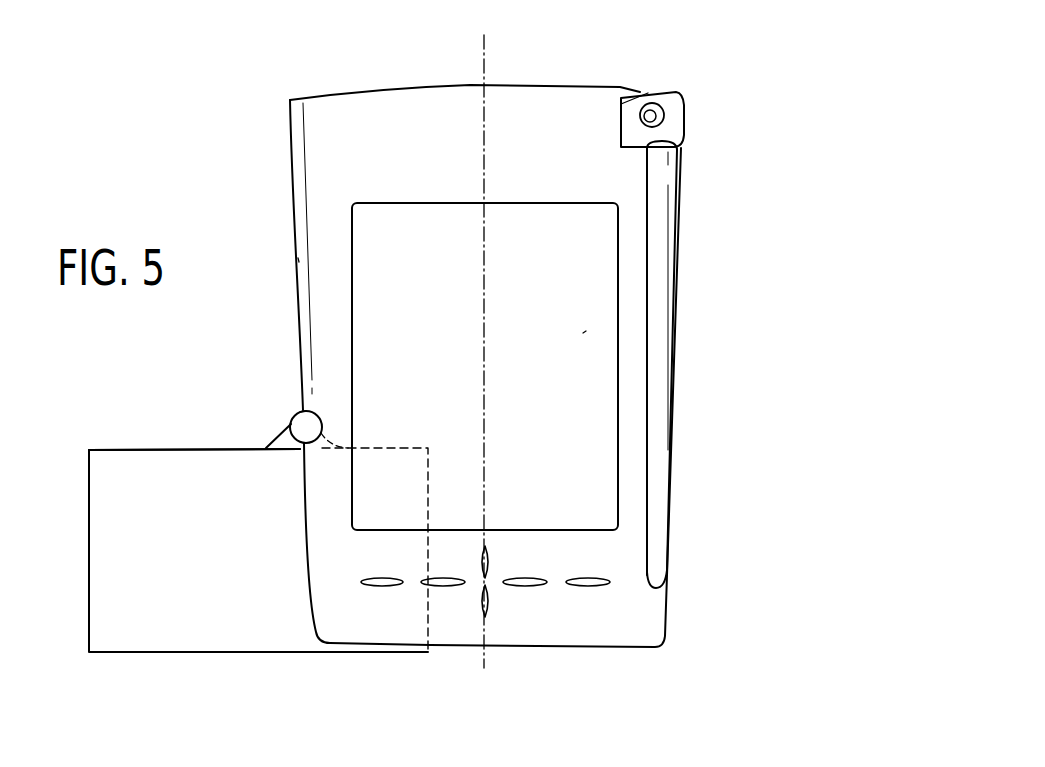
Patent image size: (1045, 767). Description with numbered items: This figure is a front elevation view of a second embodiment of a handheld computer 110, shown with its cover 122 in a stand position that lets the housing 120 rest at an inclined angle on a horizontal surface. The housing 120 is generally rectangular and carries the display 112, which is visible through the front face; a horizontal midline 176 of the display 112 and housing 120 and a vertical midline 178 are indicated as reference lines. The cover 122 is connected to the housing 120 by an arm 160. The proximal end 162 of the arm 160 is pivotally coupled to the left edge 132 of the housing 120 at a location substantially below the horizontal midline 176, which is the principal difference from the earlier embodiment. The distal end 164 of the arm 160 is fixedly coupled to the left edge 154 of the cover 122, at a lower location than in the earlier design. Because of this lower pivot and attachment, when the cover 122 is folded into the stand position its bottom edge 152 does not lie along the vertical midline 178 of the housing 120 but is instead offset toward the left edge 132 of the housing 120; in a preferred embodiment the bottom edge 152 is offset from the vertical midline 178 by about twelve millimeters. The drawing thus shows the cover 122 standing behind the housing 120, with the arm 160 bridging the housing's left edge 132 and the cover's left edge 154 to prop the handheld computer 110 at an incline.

The handheld computer 110 is at (512, 342).
The display 112 is at (618, 262).
The housing 120 is at (291, 135).
The cover 122 is at (253, 518).
The left edge 132 is at (298, 258).
The bottom edge 152 is at (430, 492).
The left edge 154 is at (117, 448).
The arm 160 is at (289, 425).
The proximal end 162 is at (302, 411).
The distal end 164 is at (283, 440).
The horizontal midline 176 is at (583, 332).
The vertical midline 178 is at (484, 62).